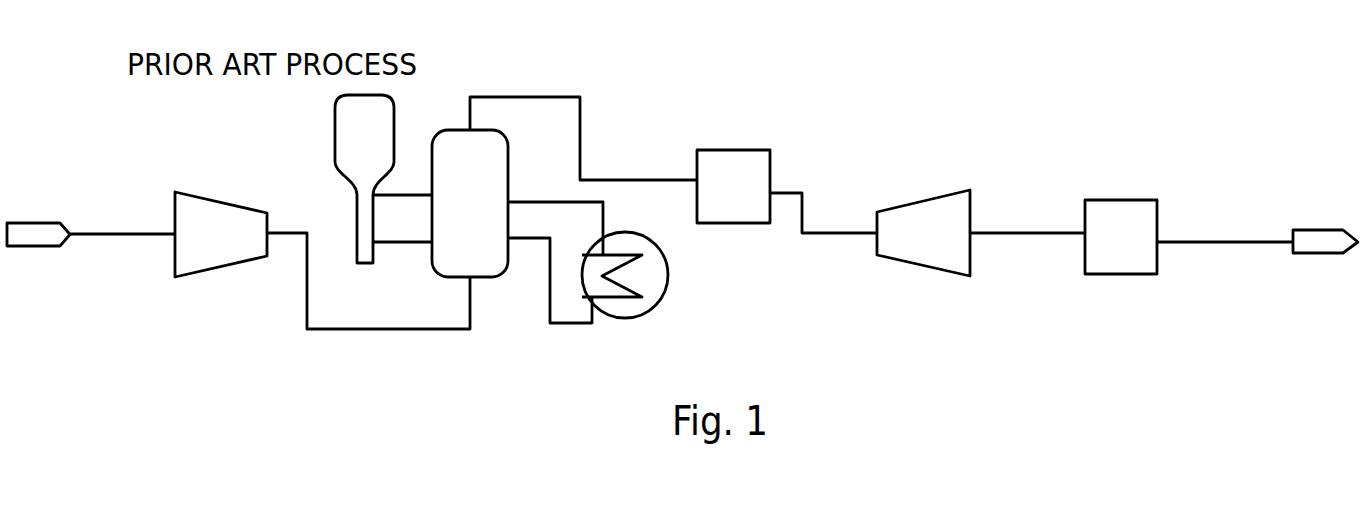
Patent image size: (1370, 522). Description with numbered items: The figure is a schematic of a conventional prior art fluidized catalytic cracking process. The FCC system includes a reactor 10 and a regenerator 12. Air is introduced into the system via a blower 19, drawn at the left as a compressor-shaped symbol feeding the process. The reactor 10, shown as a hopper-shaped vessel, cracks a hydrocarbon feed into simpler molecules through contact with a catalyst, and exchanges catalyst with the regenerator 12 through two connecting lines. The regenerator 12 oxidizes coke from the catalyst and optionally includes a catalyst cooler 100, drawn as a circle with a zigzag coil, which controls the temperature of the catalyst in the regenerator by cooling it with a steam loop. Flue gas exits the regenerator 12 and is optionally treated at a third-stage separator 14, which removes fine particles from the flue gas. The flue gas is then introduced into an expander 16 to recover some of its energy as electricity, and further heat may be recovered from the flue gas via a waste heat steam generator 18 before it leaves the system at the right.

The reactor 10 is at (335, 143).
The regenerator 12 is at (470, 203).
The third-stage separator 14 is at (733, 186).
The expander 16 is at (923, 233).
The waste heat steam generator 18 is at (1121, 237).
The blower 19 is at (220, 267).
The catalyst cooler 100 is at (660, 298).